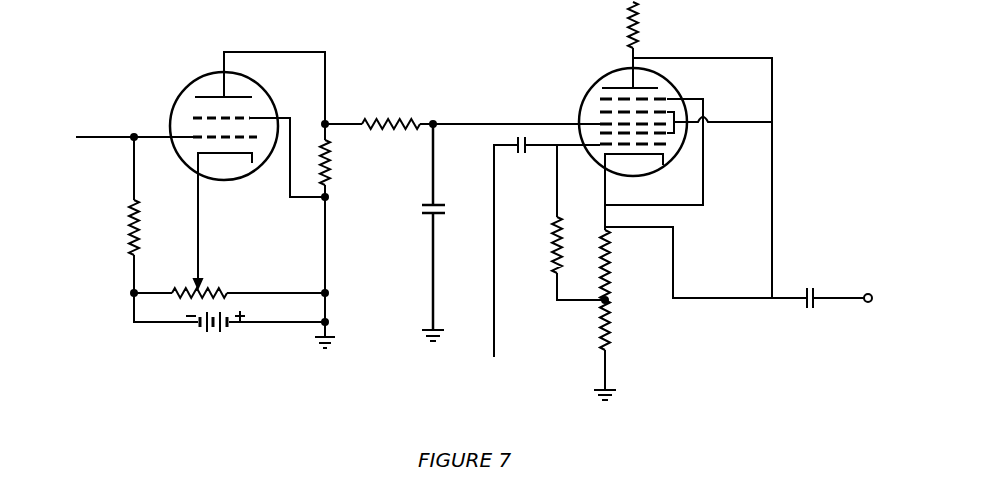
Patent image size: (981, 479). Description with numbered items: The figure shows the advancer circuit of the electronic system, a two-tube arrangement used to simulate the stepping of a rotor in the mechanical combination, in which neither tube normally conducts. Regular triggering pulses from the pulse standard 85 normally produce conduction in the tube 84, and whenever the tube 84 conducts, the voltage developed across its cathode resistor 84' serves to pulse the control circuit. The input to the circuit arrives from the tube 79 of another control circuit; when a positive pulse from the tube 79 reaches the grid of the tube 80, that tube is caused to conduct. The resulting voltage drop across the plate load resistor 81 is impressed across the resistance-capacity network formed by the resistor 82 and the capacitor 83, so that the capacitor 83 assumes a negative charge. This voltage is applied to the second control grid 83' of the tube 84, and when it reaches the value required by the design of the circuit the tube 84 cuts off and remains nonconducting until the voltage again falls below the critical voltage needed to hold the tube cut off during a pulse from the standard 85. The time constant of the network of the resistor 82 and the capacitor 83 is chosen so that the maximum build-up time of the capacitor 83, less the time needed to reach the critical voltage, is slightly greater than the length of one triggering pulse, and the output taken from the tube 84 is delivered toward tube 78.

The tube 80 is at (200, 73).
The plate load resistor 81 is at (331, 160).
The resistor of resistance-capacity network 82 is at (378, 119).
The capacitor 83 is at (445, 232).
The second control grid 83' is at (603, 110).
The tube 84 is at (675, 150).
The cathode resistor 84' is at (624, 315).
The tube 79 is at (106, 138).
The tube 78 (output) 78 is at (846, 300).
The standard 85 is at (520, 264).